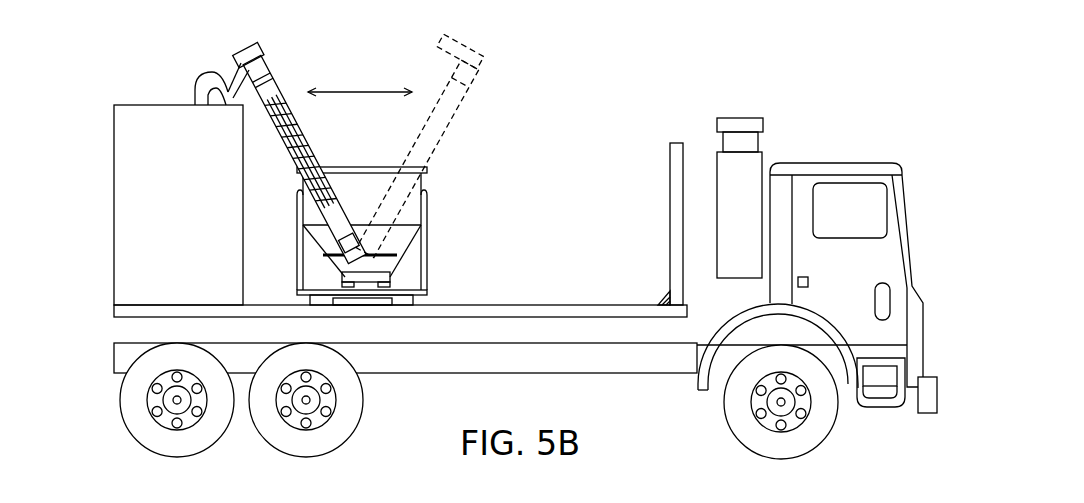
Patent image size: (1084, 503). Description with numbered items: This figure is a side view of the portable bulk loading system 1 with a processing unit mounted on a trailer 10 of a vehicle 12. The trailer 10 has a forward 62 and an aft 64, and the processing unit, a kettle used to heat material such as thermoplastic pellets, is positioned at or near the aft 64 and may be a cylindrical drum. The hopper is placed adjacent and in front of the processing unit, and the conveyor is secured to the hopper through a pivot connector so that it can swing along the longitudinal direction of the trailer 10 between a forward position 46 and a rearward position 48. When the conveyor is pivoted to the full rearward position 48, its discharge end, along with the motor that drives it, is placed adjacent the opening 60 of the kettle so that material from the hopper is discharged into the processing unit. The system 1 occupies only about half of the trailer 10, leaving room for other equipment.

The system 1 is at (453, 196).
The trailer 10 is at (545, 302).
The vehicle 12 is at (823, 159).
The forward position 46 is at (480, 62).
The rearward position 48 is at (267, 61).
The opening 60 is at (195, 79).
The forward 62 is at (667, 162).
The aft 64 is at (111, 303).